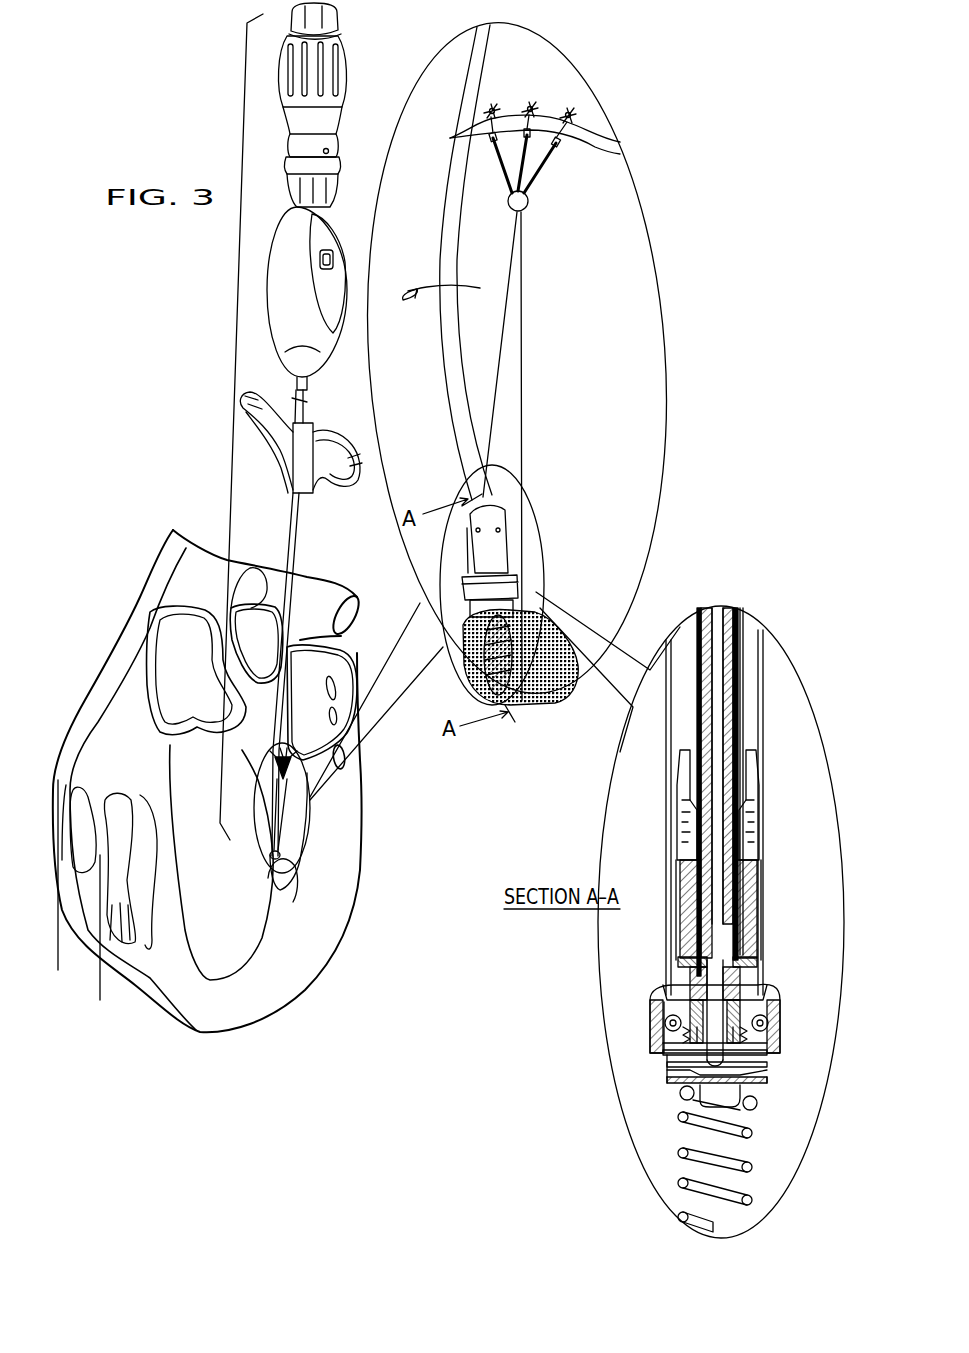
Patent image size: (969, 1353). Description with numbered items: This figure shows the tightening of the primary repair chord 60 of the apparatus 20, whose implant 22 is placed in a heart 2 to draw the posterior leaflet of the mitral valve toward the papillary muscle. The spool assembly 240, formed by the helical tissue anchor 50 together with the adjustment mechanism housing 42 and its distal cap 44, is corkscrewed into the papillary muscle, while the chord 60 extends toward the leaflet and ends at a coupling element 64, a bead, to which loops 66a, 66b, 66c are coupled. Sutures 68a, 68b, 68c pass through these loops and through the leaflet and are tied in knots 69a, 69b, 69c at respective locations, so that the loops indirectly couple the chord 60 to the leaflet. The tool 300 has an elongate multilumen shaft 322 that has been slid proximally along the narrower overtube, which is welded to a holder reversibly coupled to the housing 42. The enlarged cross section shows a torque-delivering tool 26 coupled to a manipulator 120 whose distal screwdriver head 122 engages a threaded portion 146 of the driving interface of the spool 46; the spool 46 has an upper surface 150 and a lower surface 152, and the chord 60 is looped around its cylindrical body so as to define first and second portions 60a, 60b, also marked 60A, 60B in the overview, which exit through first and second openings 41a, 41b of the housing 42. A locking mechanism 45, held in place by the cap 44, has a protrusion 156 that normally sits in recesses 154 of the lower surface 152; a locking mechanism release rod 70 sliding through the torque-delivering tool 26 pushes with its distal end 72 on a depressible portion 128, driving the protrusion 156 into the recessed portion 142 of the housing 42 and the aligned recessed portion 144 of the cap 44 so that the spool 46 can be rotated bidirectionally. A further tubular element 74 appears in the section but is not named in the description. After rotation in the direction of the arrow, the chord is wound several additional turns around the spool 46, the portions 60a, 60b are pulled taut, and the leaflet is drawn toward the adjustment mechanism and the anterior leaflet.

The heart 2 is at (323, 960).
The apparatus 20 is at (672, 322).
The implant 22 is at (540, 305).
The torque-delivering tool 26 is at (702, 608).
The first opening 41a is at (681, 1027).
The second opening 41b is at (782, 1027).
The housing 42 is at (764, 1011).
The distal cap 44 is at (750, 1083).
The locking mechanism 45 is at (687, 1080).
The spool 46 is at (663, 1020).
The helical tissue anchor 50 is at (754, 1136).
The primary repair chord 60 is at (757, 1000).
The first portion of primary repair chord 60A is at (502, 368).
The second portion of primary repair chord 60B is at (523, 328).
The first portion of primary repair chord 60a is at (667, 774).
The second portion of primary repair chord 60b is at (790, 780).
The coupling element 64 is at (514, 210).
The loop 66a is at (513, 168).
The loop 66b is at (518, 180).
The loop 66c is at (538, 185).
The first suture 68a is at (488, 134).
The suture 68b is at (537, 148).
The suture 68c is at (557, 146).
The first knot 69a is at (490, 106).
The knot 69b is at (530, 105).
The knot 69c is at (569, 112).
The locking mechanism release rod 70 is at (715, 670).
The distal end of locking mechanism release rod 72 is at (720, 1125).
The inner tube 74 is at (727, 608).
The manipulator 120 is at (684, 882).
The screwdriver head 122 is at (733, 971).
The depressible portion 128 is at (770, 1067).
The recessed portion 142 is at (660, 1063).
The recessed portion of cap 144 is at (654, 1080).
The threaded portion 146 is at (706, 970).
The upper surface 150 is at (755, 965).
The lower surface 152 is at (773, 1037).
The recesses 154 is at (680, 1037).
The protrusion 156 is at (660, 1069).
The spool assembly 240 is at (470, 640).
The tool 300 is at (236, 420).
The elongate multilumen shaft 322 is at (294, 541).